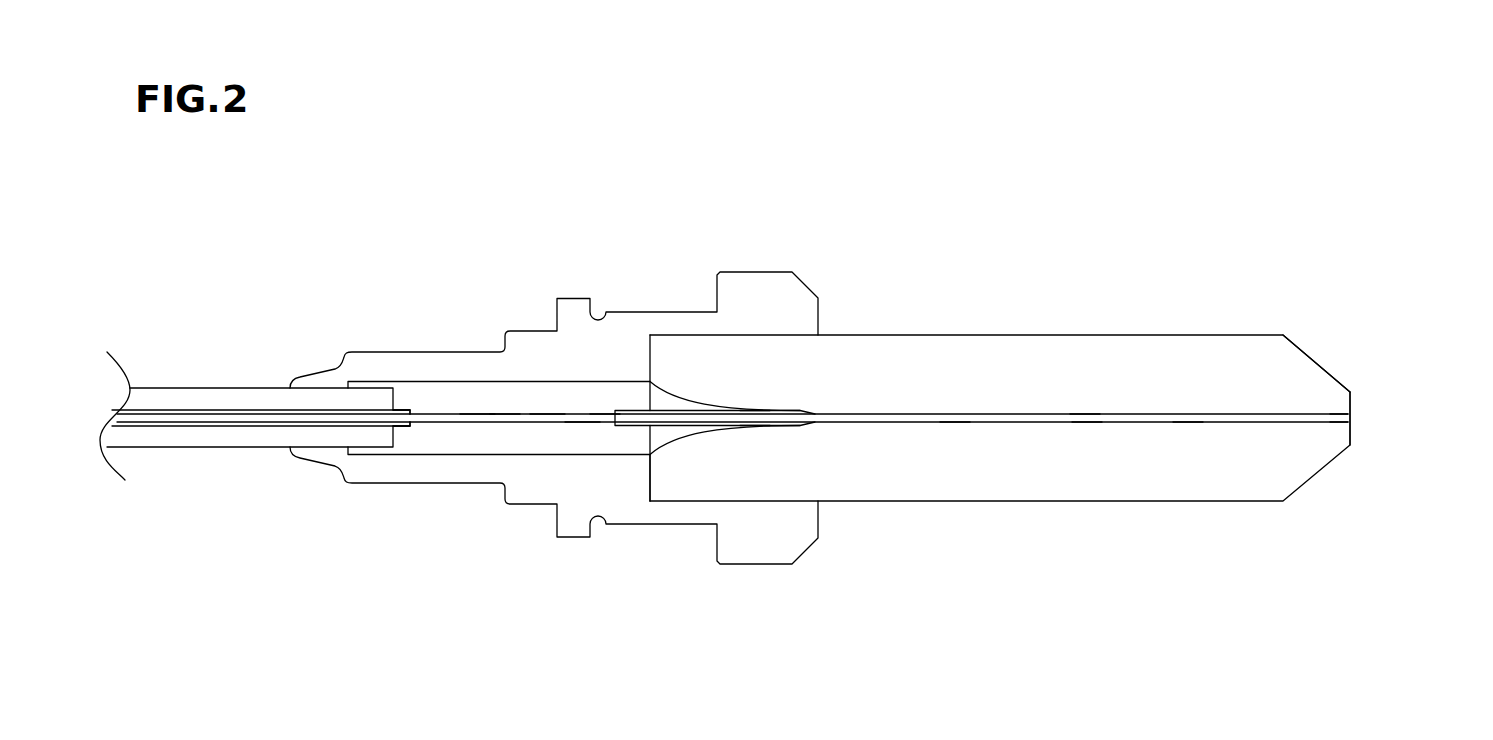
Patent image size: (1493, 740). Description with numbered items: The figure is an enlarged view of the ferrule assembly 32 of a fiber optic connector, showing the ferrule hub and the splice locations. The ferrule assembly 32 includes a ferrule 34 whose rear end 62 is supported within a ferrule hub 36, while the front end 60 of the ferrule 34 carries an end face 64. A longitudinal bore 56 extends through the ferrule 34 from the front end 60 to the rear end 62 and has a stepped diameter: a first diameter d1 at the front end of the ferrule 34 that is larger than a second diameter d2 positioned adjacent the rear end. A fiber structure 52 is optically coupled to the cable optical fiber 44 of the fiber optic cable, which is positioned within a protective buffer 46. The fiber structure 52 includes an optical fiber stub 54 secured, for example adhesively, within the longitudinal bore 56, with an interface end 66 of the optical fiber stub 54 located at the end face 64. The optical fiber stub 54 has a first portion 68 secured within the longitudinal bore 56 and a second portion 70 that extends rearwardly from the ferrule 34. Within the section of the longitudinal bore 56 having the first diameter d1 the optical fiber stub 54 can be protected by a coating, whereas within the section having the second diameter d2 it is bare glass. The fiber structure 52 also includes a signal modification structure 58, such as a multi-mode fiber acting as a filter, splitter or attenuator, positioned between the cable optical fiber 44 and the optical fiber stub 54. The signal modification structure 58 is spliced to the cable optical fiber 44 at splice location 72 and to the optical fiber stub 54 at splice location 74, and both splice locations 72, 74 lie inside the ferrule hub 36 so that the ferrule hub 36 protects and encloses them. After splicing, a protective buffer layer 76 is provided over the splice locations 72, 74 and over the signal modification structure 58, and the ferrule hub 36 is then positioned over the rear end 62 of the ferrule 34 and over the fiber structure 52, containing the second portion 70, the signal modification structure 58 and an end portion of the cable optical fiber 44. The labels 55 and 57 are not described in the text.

The ferrule assembly 32 is at (735, 153).
The ferrule 34 is at (913, 335).
The ferrule hub 36 is at (618, 312).
The cable optical fiber 44 is at (443, 423).
The protective buffer 46 is at (140, 388).
The fiber structure 52 is at (581, 423).
The optical fiber stub 54 is at (953, 423).
The ferrule bore 55 is at (667, 410).
The longitudinal bore 56 is at (1085, 413).
The buffer end 57 is at (403, 410).
The signal modification structure 58 is at (503, 414).
The front end 60 is at (1350, 392).
The rear end 62 is at (650, 480).
The end face 64 is at (1350, 403).
The interface end 66 is at (1343, 418).
The first portion 68 is at (1087, 423).
The second portion 70 is at (603, 413).
The splice location 72 is at (478, 413).
The splice location 74 is at (547, 414).
The protective buffer layer 76 is at (388, 454).
The first diameter d1 is at (753, 411).
The second diameter d2 is at (1188, 423).